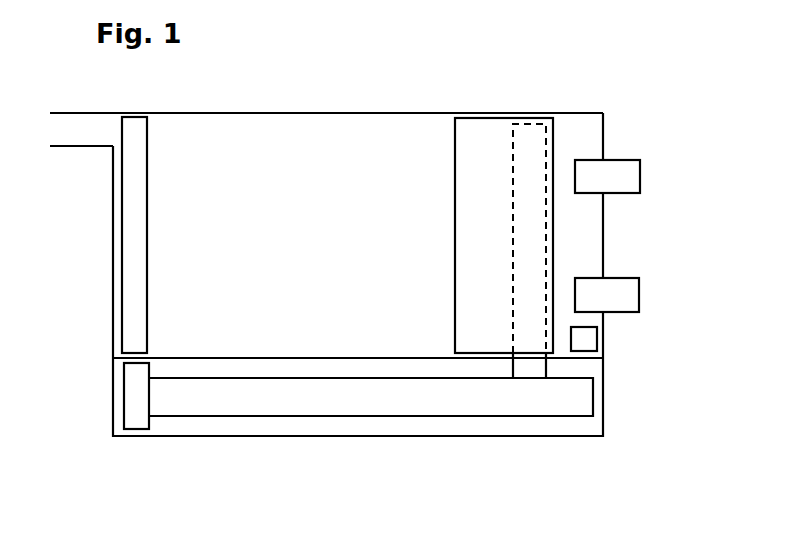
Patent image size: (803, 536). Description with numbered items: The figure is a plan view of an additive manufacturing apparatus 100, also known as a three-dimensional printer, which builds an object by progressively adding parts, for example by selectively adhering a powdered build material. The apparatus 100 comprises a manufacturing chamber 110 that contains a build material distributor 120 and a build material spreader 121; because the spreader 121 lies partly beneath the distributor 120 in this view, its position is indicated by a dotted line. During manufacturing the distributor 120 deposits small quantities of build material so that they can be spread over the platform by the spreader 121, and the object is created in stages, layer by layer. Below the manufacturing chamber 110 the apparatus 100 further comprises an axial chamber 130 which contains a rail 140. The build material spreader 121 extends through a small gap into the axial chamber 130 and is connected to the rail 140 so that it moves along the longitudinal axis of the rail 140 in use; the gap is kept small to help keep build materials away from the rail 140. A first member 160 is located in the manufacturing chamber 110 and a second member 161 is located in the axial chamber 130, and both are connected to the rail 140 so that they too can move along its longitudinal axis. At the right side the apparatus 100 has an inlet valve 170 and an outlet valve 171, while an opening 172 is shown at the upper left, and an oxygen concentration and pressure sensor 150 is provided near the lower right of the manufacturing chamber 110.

The additive manufacturing apparatus 100 is at (579, 86).
The manufacturing chamber 110 is at (298, 125).
The build material distributor 120 is at (482, 128).
The build material spreader 121 is at (537, 364).
The axial chamber 130 is at (510, 436).
The rail 140 is at (396, 407).
The oxygen concentration and pressure sensor 150 is at (589, 337).
The first member 160 is at (139, 130).
The second member 161 is at (141, 430).
The inlet valve 170 is at (633, 160).
The outlet valve 171 is at (620, 278).
The opening 172 is at (80, 146).